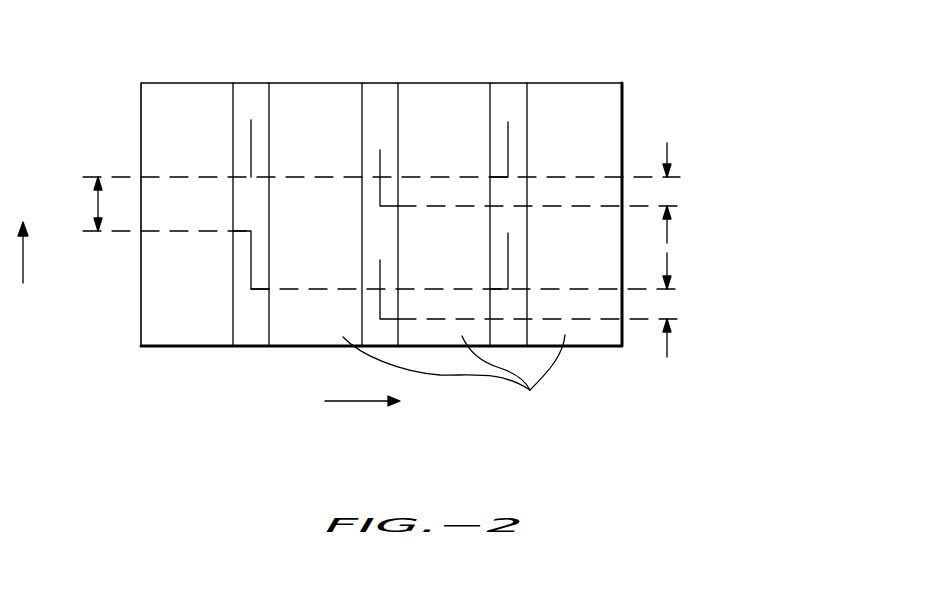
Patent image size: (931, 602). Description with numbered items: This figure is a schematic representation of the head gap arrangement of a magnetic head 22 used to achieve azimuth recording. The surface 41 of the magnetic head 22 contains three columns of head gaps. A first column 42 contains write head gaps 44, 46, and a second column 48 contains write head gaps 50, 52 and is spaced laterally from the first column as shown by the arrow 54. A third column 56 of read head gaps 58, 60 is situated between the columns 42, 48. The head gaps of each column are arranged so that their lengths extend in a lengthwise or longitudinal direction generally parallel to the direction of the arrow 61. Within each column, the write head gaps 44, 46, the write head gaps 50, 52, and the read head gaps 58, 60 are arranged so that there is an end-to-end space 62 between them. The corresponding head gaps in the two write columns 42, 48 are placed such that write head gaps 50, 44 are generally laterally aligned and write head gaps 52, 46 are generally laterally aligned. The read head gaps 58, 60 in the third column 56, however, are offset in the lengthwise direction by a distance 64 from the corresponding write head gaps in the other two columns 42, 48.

The magnetic head 22 is at (578, 83).
The surface 41 is at (454, 376).
The first column 42 is at (508, 83).
The write head gap 44 is at (508, 152).
The write head gap 46 is at (508, 265).
The second column 48 is at (252, 83).
The write head gap 50 is at (250, 137).
The write head gap 52 is at (251, 267).
The arrow 54 is at (362, 413).
The third column 56 is at (380, 83).
The read head gap 58 is at (380, 161).
The read head gap 60 is at (380, 278).
The arrow 61 is at (21, 267).
The end-to-end space 62 is at (97, 205).
The distance 64 is at (667, 304).